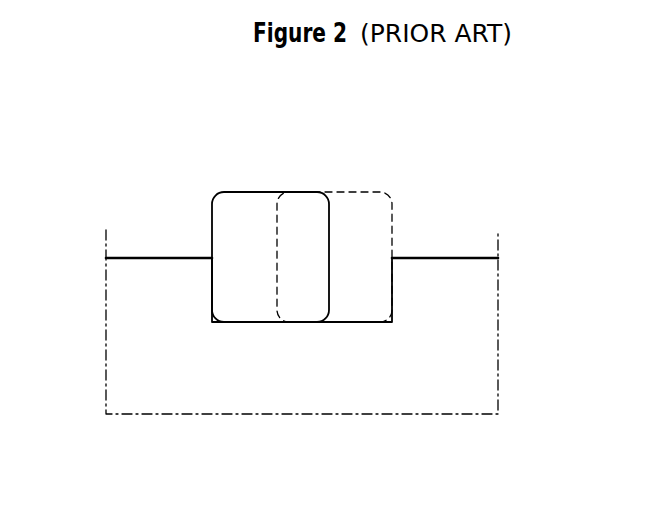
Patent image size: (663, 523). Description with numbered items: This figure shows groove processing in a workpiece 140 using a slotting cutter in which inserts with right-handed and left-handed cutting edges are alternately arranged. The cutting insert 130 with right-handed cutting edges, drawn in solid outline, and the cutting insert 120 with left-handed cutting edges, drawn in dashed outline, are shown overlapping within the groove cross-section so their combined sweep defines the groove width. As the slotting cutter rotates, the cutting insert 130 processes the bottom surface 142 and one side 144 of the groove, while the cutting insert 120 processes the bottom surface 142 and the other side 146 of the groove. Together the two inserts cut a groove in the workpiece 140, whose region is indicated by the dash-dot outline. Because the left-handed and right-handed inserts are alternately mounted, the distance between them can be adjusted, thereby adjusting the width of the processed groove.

The cutting insert with left-handed cutting edges 120 is at (377, 186).
The cutting insert with right-handed cutting edges 130 is at (227, 186).
The workpiece 140 is at (442, 387).
The bottom surface 142 is at (300, 323).
The side of the groove 144 is at (212, 290).
The other side of the groove 146 is at (392, 290).